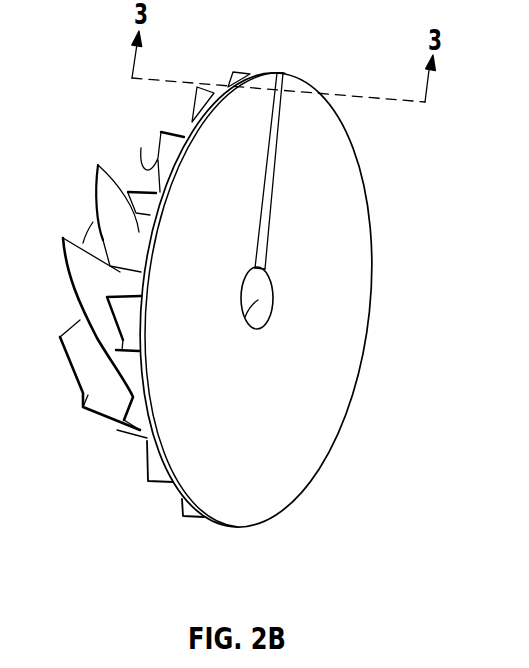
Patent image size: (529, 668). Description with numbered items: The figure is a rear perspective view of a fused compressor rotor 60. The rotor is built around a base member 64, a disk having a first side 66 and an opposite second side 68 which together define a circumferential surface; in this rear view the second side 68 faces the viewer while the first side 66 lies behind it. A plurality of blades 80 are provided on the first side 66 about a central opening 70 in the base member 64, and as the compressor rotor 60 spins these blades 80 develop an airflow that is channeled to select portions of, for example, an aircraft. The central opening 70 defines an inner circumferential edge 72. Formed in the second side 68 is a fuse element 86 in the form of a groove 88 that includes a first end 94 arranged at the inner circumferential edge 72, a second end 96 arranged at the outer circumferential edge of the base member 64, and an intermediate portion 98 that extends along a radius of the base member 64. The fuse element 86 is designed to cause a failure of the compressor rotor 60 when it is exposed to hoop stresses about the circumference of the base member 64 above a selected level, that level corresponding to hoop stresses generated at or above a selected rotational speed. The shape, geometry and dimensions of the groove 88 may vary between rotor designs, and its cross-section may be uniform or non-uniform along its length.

The compressor rotor 60 is at (345, 537).
The base member 64 is at (326, 465).
The first side 66 is at (150, 440).
The second side 68 is at (338, 166).
The central opening 70 is at (262, 305).
The inner circumferential edge 72 is at (244, 308).
The blades 80 is at (95, 235).
The fuse element 86 is at (300, 182).
The groove 88 is at (289, 154).
The first end 94 is at (257, 267).
The second end 96 is at (263, 72).
The intermediate portion 98 is at (273, 213).